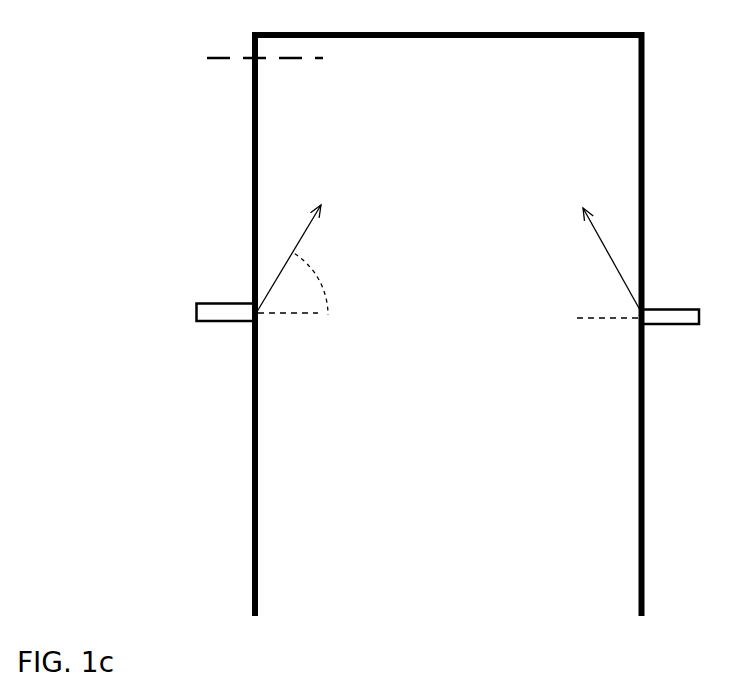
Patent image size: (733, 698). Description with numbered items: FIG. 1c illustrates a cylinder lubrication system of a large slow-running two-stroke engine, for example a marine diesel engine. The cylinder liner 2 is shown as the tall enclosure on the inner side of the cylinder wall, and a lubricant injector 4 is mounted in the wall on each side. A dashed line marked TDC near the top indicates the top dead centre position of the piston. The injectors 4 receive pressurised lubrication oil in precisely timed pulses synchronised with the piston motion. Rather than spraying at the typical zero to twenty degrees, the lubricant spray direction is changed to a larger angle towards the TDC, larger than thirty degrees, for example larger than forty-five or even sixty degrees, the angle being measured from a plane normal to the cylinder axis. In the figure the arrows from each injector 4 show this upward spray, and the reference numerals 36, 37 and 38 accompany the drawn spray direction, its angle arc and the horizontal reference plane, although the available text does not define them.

The cylinder liner 2 is at (252, 99).
The lubricant injector 4 is at (197, 304).
The fuel spray direction 36 is at (307, 237).
The spray angle 37 is at (292, 282).
The piston reference plane 38 is at (288, 318).
The top dead centre TDC is at (197, 56).